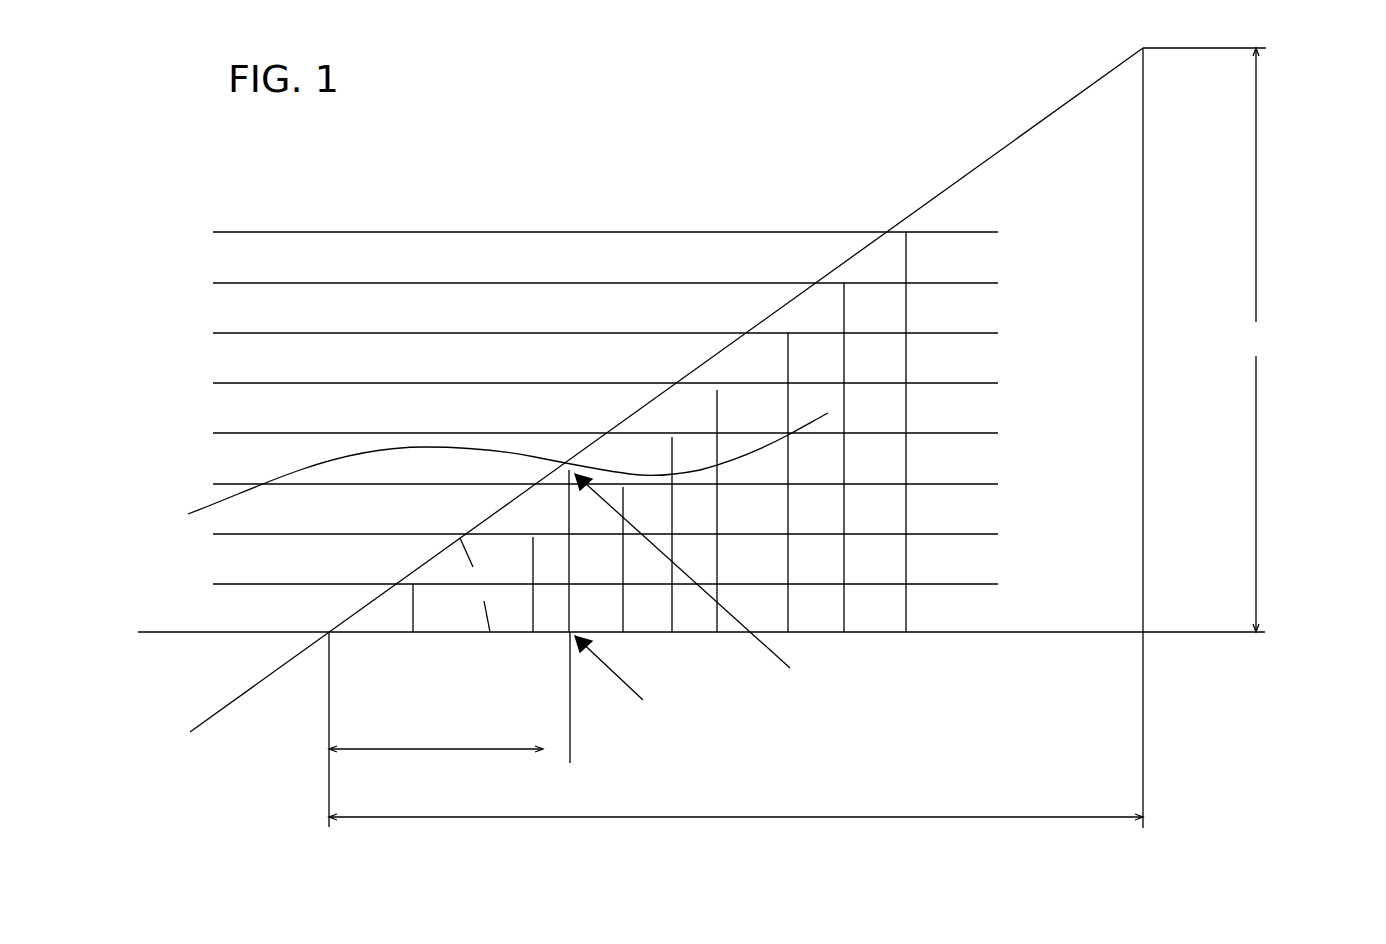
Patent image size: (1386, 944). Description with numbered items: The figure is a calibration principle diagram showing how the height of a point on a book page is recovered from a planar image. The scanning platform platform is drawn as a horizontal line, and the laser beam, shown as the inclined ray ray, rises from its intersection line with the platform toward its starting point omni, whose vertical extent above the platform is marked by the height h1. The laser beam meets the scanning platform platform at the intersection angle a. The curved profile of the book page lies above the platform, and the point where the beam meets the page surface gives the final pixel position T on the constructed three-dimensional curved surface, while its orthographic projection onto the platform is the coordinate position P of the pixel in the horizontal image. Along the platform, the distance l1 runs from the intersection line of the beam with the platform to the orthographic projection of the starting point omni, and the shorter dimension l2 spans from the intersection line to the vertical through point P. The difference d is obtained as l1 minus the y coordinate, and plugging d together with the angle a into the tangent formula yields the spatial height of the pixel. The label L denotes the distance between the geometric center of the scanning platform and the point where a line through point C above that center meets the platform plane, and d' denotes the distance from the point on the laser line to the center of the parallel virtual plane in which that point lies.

The scanning platform is at (593, 432).
The ray from omnidirectional camera ray is at (653, 392).
The omnidirectional camera position omni is at (1192, 414).
The height of omnidirectional camera h1 is at (1259, 340).
The distance between intersection point and geometric center of scanning platform L is at (1350, 341).
The intersection angle of the laser beam and the scanning platform a is at (475, 585).
The final pixel position T is at (703, 588).
The coordinate position of the 3D pixel in the horizontal image P is at (629, 672).
The distance l2 from ray origin to point P l2 is at (449, 729).
The difference in distance d is at (446, 697).
The distance from intersection line to projection of laser starting point l1 is at (736, 818).
The distance from point on laser line to center point of its parallel plane d' is at (748, 877).